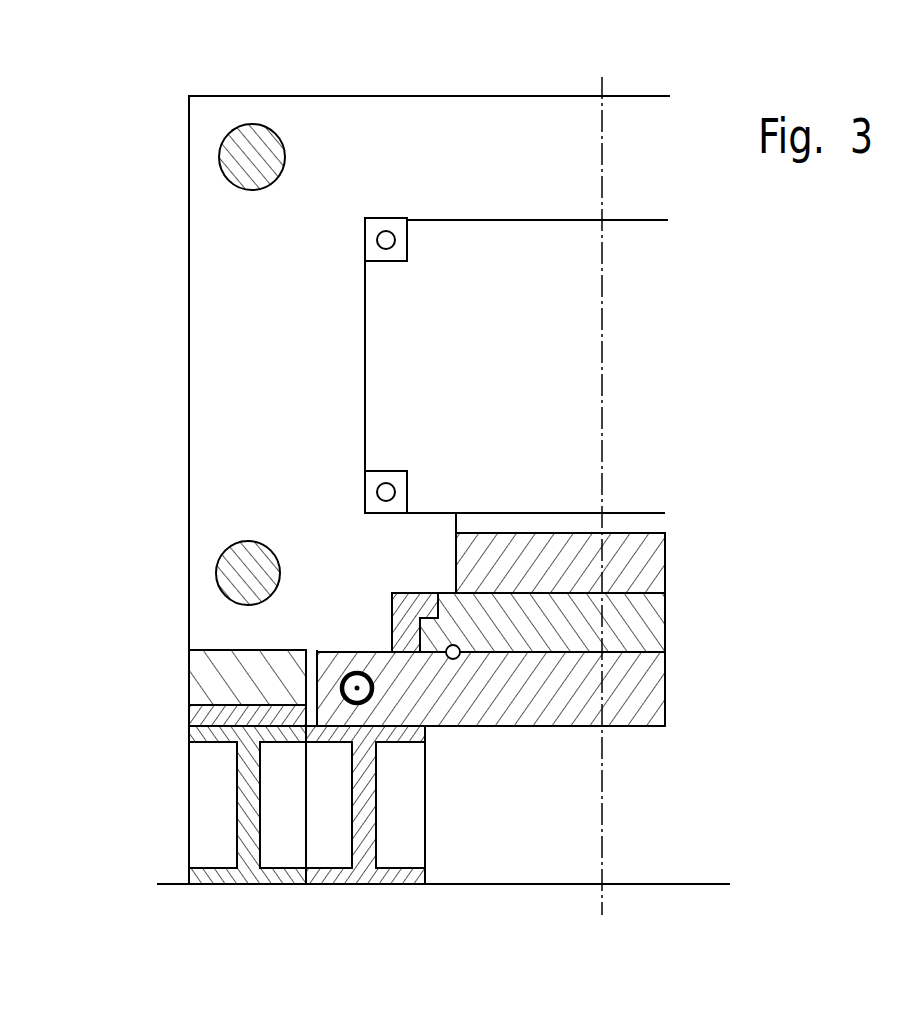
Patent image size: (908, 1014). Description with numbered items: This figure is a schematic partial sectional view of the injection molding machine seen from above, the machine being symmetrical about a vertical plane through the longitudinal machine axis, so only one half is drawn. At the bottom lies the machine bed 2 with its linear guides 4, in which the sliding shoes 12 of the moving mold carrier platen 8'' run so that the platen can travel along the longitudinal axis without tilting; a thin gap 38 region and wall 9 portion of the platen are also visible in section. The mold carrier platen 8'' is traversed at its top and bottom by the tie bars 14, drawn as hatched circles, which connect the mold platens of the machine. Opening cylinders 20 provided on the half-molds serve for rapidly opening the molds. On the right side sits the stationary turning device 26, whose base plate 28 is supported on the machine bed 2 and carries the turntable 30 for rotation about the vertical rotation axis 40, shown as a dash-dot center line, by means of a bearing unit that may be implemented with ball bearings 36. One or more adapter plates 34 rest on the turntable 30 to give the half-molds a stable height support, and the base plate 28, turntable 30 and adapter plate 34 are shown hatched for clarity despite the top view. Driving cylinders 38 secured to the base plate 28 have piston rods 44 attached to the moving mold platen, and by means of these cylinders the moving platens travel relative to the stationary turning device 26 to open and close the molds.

The machine bed 2 is at (200, 808).
The linear guides 4 is at (200, 718).
The mold carrier platen 8'' is at (406, 373).
The housing wall 9 is at (378, 397).
The sliding shoes 12 is at (200, 672).
The tie bars 14 is at (228, 156).
The opening cylinders 20 is at (366, 242).
The turning device 26 is at (641, 738).
The base plate 28 is at (645, 690).
The turntable 30 is at (648, 626).
The adapter plate 34 is at (648, 565).
The ball bearings 36 is at (456, 659).
The driving cylinders 38 is at (343, 677).
The rotation axis 40 is at (603, 82).
The piston rods 44 is at (357, 671).